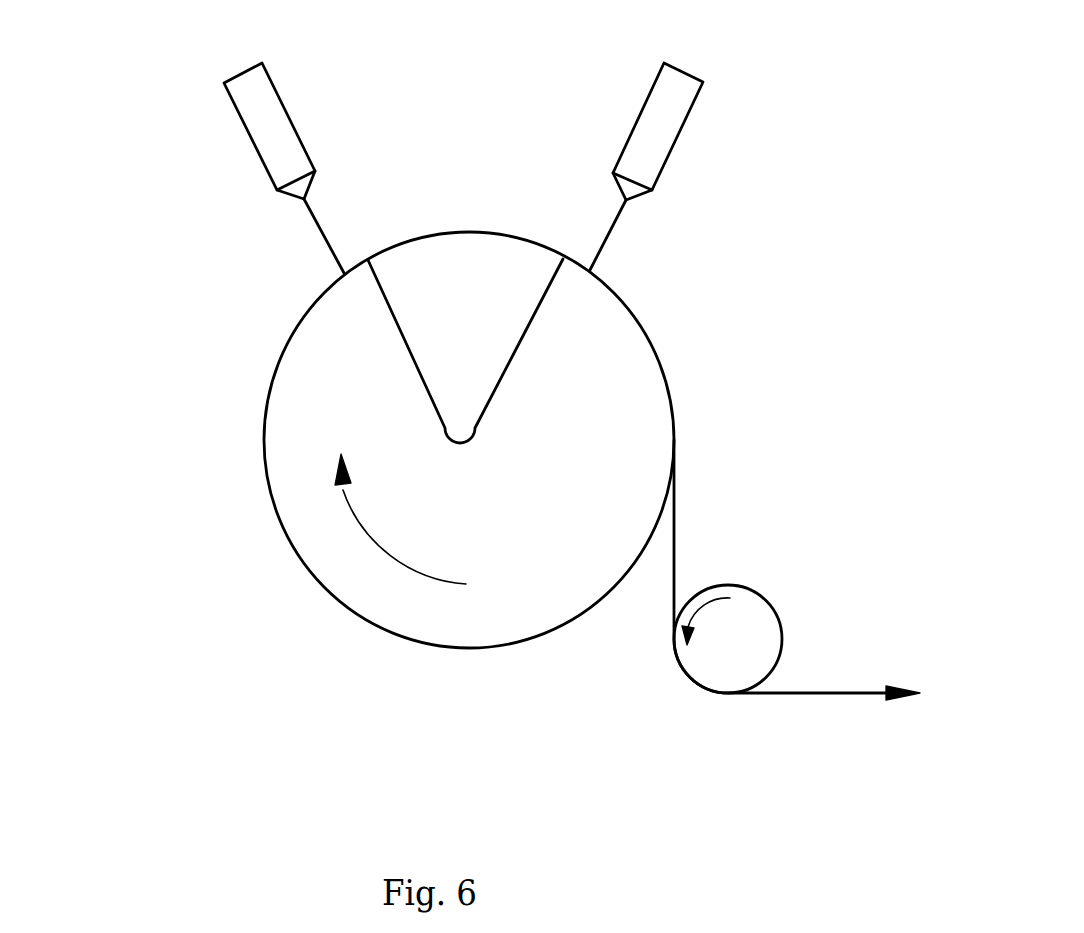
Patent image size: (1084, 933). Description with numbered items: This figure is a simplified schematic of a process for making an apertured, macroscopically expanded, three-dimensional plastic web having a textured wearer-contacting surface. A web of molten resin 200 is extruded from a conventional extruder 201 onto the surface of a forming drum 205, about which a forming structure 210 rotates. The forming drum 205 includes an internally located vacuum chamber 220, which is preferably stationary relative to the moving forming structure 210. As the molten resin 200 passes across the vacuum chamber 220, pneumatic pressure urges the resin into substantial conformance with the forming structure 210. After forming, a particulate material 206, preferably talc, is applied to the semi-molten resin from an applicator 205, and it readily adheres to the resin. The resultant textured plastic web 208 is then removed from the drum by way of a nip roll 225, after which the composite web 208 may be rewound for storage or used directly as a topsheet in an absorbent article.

The molten resin 200 is at (323, 228).
The extruder 201 is at (265, 87).
The forming drum 205 is at (660, 105).
The particulate material 206 is at (610, 227).
The plastic web 208 is at (677, 532).
The forming structure 210 is at (267, 438).
The vacuum chamber 220 is at (410, 358).
The nip roll 225 is at (763, 642).